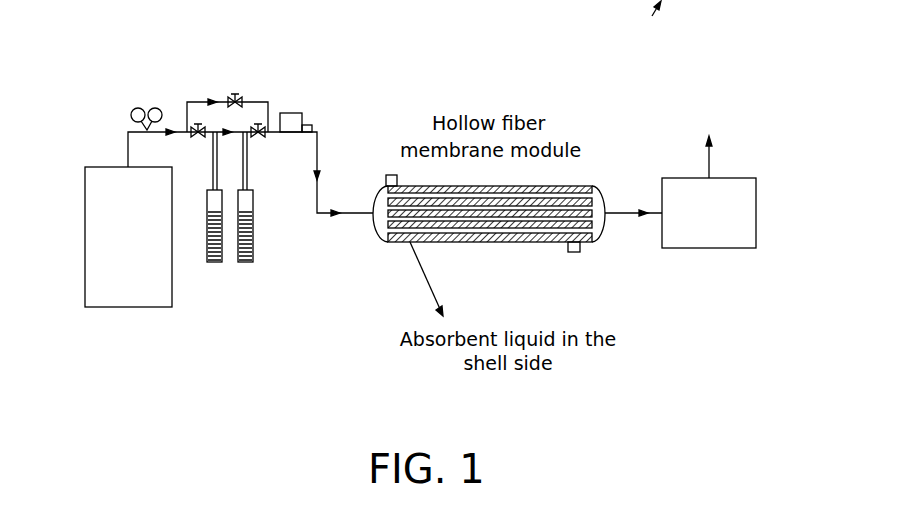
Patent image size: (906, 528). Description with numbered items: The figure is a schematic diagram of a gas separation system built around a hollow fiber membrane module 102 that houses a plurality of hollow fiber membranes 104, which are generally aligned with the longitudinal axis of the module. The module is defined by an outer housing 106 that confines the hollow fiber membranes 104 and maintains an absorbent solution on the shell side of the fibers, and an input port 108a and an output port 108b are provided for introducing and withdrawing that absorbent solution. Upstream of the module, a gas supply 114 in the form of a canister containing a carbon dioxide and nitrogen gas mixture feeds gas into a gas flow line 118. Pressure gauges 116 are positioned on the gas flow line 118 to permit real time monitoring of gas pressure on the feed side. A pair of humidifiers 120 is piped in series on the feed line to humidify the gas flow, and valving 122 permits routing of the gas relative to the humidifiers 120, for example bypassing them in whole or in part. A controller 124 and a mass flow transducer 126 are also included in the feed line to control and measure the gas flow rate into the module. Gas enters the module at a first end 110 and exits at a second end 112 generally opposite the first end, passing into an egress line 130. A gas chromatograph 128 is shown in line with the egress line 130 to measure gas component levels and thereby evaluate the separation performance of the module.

The hollow fiber membrane module 102 is at (495, 211).
The hollow fiber membranes 104 is at (528, 212).
The outer housing 106 is at (382, 236).
The input port 108a is at (391, 174).
The output port 108b is at (572, 255).
The first end 110 is at (370, 205).
The second end 112 is at (603, 200).
The gas supply 114 is at (97, 183).
The pressure gauge 116 is at (153, 108).
The gas flow line 118 is at (127, 145).
The humidifiers 120 is at (222, 248).
The valving 122 is at (258, 126).
The controller 124 is at (290, 113).
The mass flow transducer 126 is at (307, 125).
The gas chromatograph 128 is at (737, 188).
The egress line 130 is at (625, 217).